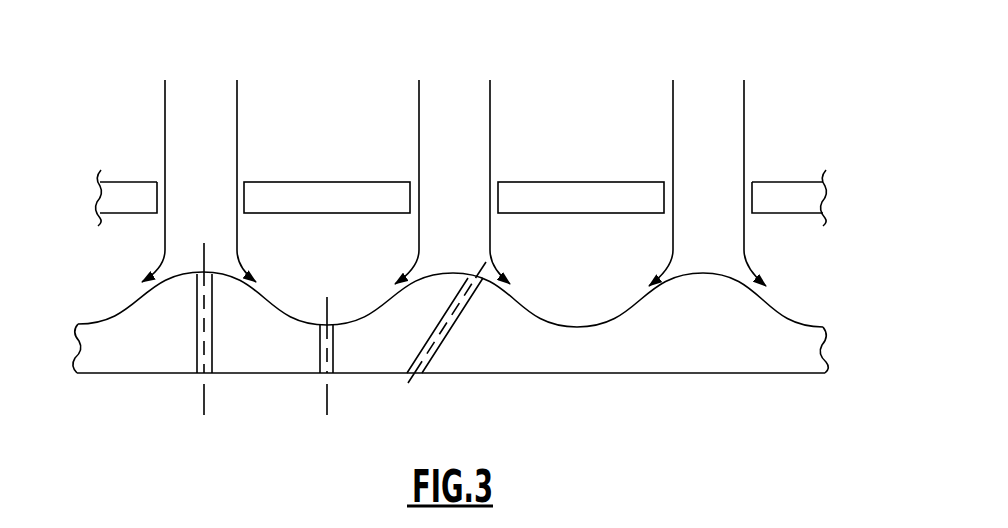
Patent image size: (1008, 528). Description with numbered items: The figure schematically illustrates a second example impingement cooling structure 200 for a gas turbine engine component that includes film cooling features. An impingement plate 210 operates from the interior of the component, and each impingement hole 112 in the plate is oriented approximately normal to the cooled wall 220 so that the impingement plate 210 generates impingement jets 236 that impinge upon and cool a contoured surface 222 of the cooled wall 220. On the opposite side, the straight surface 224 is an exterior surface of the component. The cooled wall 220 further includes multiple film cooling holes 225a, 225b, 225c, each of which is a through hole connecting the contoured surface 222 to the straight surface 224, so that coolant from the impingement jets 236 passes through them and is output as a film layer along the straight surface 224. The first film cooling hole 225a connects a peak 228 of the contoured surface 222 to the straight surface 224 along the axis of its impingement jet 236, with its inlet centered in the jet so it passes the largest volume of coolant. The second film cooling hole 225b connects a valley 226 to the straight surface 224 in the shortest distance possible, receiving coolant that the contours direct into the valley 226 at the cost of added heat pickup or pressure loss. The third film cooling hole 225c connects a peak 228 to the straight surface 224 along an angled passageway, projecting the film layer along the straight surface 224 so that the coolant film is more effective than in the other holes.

The impingement cooling structure 200 is at (624, 78).
The impingement plate 210 is at (323, 192).
The impingement hole 112 is at (493, 183).
The cooled wall 220 is at (826, 376).
The contoured surface 222 is at (627, 306).
The straight surface 224 is at (663, 374).
The first film cooling hole 225a is at (214, 362).
The second film cooling hole 225b is at (337, 362).
The third film cooling hole 225c is at (434, 350).
The valley 226 is at (333, 322).
The peak 228 is at (205, 270).
The impingement jet 236 is at (470, 230).